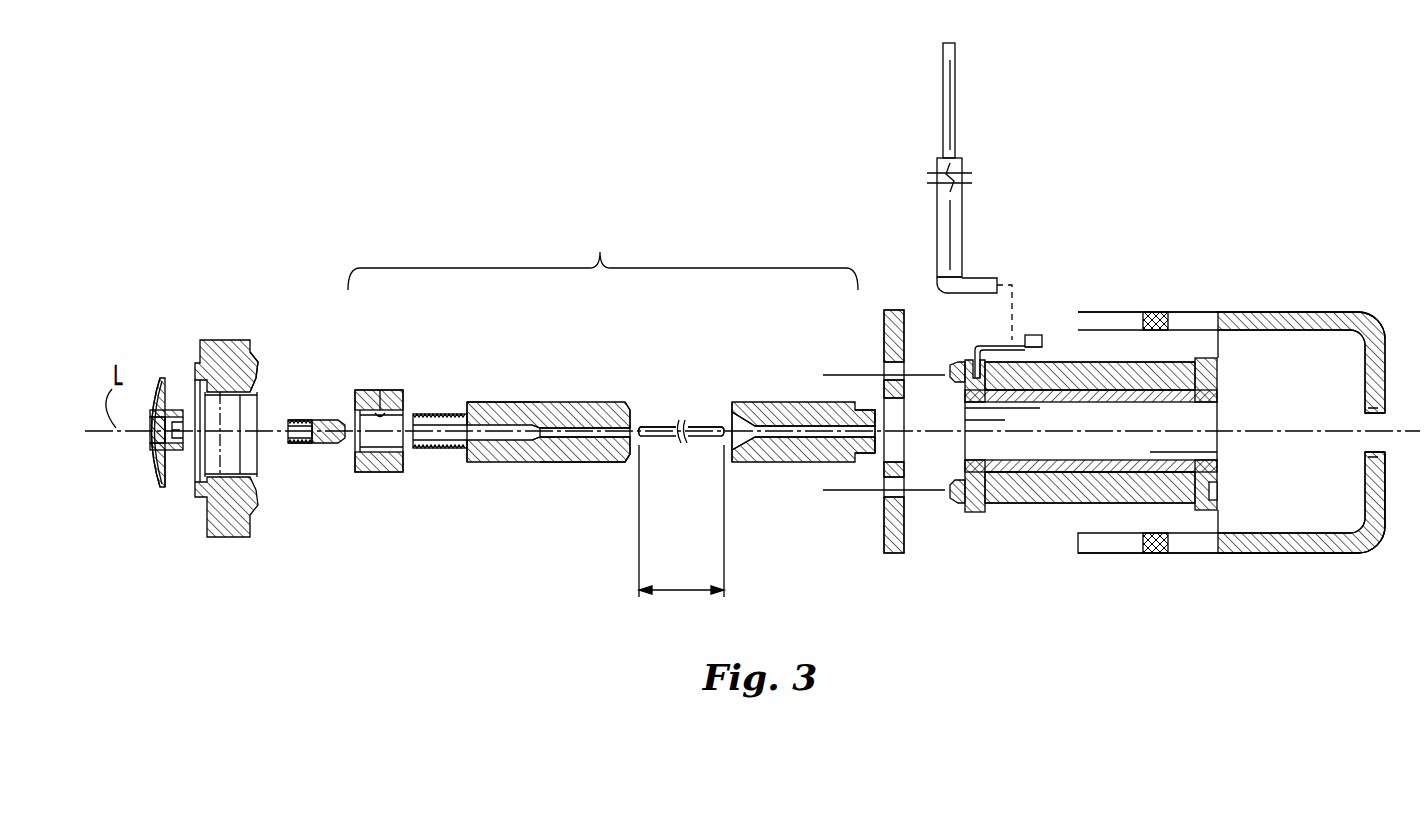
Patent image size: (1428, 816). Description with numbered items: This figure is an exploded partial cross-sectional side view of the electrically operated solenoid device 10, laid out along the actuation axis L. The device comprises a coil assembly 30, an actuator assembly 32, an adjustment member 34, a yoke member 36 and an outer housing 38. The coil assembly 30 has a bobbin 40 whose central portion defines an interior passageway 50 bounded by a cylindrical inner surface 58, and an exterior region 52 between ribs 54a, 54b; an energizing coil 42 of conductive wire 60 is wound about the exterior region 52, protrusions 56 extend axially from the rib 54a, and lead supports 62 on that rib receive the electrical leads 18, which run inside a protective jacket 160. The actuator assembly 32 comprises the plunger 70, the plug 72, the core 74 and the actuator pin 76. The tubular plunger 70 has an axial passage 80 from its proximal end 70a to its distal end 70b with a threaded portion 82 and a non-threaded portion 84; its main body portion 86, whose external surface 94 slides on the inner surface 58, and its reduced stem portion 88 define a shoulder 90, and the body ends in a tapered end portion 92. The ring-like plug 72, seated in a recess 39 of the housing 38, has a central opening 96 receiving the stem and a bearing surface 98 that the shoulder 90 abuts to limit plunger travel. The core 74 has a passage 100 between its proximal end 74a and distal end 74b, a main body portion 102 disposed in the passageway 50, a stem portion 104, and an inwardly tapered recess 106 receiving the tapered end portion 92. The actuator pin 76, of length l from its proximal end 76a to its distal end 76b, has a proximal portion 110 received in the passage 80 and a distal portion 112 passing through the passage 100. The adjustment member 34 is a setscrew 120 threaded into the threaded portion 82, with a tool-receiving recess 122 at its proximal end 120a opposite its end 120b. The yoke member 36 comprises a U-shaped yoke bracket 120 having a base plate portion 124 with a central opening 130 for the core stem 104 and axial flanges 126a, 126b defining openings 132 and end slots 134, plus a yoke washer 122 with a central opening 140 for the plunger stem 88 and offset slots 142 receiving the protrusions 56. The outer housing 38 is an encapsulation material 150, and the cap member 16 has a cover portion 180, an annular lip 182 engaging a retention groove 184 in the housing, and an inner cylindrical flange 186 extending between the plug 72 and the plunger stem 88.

The electrically operated solenoid device 10 is at (425, 160).
The cap member 16 is at (142, 429).
The electrical leads 18 is at (946, 168).
The coil assembly 30 is at (1113, 402).
The actuator assembly 32 is at (603, 249).
The adjustment member 34 is at (305, 418).
The yoke member 36 is at (1042, 414).
The outer housing 38 is at (243, 409).
The recess 39 is at (255, 471).
The bobbin 40 is at (1150, 355).
The energizing coil 42 is at (1177, 388).
The interior passageway 50 is at (1076, 427).
The exterior region 52 is at (1182, 503).
The rib 54a is at (982, 505).
The rib 54b is at (1200, 512).
The protrusions 56 is at (955, 375).
The inner surface 58 is at (1196, 403).
The electrically conductive wire 60 is at (1092, 375).
The lead supports 62 is at (1033, 335).
The actuator plunger 70 is at (521, 417).
The proximal end of plunger 70a is at (432, 405).
The distal end of plunger 70b is at (618, 392).
The plug 72 is at (384, 403).
The core 74 is at (804, 421).
The proximal end of core 74a is at (737, 395).
The distal end of core 74b is at (868, 395).
The actuator pin 76 is at (662, 450).
The proximal end of actuator pin 76a is at (645, 447).
The distal end of actuator pin 76b is at (720, 446).
The axial passage 80 is at (600, 420).
The threaded portion 82 is at (485, 404).
The non-threaded portion 84 is at (560, 425).
The main body portion of plunger 86 is at (527, 468).
The plunger stem portion 88 is at (433, 450).
The shoulder 90 is at (467, 463).
The tapered end portion 92 is at (615, 463).
The external plunger surface 94 is at (562, 463).
The central opening of plug 96 is at (375, 394).
The bearing surface 98 is at (399, 460).
The core passage 100 is at (840, 415).
The main body portion of core 102 is at (772, 468).
The core stem portion 104 is at (868, 467).
The inwardly tapered recess 106 is at (735, 463).
The proximal portion of actuator pin 110 is at (648, 422).
The distal portion of actuator pin 112 is at (704, 420).
The setscrew / U-shaped yoke bracket 120 is at (842, 433).
The proximal end of setscrew 120a is at (584, 501).
The stud solid portion 120b is at (338, 452).
The tool receiving recess / yoke washer 122 is at (292, 425).
The base plate portion 124 is at (1386, 510).
The axial flange portion 126a is at (1305, 312).
The axial flange portion 126b is at (1270, 553).
The central opening of base plate 130 is at (1386, 440).
The openings in yoke flanges 132 is at (1220, 315).
The slots 134 is at (1155, 320).
The central opening of yoke washer 140 is at (905, 410).
The slots of yoke washer 142 is at (905, 365).
The encapsulation material 150 is at (244, 363).
The protective jacket 160 is at (938, 211).
The cover portion 180 is at (148, 466).
The annular lip portion 182 is at (165, 490).
The annular retention groove 184 is at (213, 357).
The inner cylindrical flange portion 186 is at (178, 408).